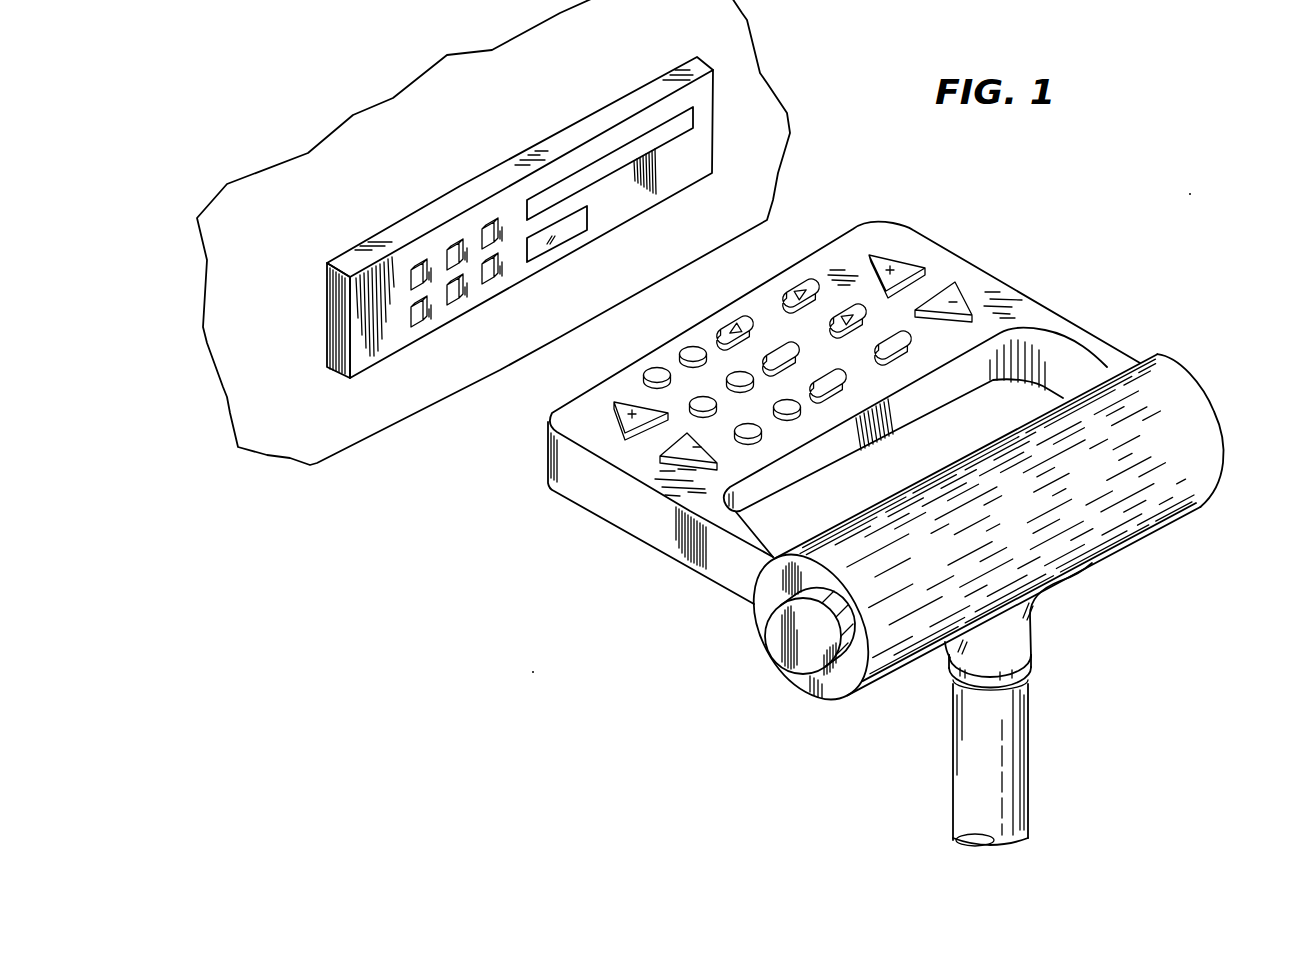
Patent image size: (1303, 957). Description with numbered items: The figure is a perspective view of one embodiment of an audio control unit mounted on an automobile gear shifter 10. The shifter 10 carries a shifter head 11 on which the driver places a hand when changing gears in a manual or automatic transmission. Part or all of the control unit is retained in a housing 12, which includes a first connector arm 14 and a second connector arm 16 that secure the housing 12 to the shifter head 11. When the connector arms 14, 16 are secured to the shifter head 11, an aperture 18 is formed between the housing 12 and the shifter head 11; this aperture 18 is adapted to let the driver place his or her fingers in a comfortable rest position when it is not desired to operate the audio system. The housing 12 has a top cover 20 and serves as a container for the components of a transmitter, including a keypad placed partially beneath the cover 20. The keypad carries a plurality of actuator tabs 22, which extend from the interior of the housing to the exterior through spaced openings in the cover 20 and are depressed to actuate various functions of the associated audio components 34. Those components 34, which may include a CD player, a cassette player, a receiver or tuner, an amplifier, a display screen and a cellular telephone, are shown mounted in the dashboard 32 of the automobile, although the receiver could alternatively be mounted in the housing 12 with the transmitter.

The shifter 10 is at (1235, 403).
The shifter head 11 is at (1160, 519).
The housing 12 is at (1092, 257).
The first connector arm 14 is at (1103, 347).
The second connector arm 16 is at (767, 538).
The aperture 18 is at (941, 460).
The top cover 20 is at (970, 267).
The actuator tabs 22 is at (613, 415).
The dashboard 32 is at (274, 254).
The audio system components 34 is at (687, 173).